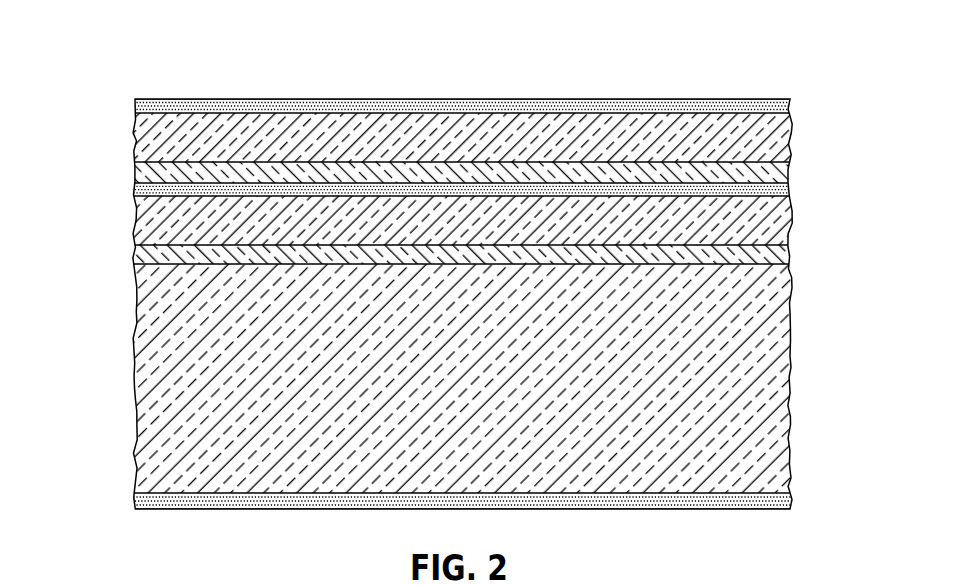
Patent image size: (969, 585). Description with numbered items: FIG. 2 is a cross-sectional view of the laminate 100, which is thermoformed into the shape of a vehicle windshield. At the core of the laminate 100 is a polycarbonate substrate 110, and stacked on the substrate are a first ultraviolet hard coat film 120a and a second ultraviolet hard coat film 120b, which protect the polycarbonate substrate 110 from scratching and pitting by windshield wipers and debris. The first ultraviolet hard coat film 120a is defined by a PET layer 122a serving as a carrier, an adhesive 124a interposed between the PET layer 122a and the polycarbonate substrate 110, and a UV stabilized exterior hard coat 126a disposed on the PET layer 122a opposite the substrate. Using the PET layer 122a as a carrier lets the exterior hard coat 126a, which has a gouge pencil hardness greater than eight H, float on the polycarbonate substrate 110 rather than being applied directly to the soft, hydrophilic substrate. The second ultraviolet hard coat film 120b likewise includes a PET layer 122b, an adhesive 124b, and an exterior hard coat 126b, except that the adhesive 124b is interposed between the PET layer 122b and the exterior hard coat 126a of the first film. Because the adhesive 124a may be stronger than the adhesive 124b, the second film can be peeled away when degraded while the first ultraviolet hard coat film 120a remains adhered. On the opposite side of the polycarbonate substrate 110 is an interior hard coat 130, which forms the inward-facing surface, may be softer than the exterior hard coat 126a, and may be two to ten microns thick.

The laminate 100 is at (122, 45).
The polycarbonate substrate 110 is at (788, 364).
The first ultraviolet hard coat film 120a is at (115, 185).
The second ultraviolet hard coat film 120b is at (115, 99).
The PET layer 122a is at (788, 223).
The PET layer 122b is at (788, 139).
The adhesive 124a is at (788, 257).
The adhesive 124b is at (788, 171).
The exterior hard coat 126a is at (788, 189).
The exterior hard coat 126b is at (791, 105).
The interior hard coat 130 is at (788, 502).